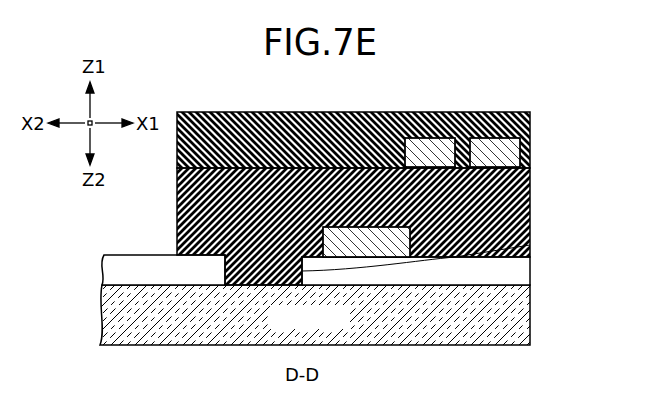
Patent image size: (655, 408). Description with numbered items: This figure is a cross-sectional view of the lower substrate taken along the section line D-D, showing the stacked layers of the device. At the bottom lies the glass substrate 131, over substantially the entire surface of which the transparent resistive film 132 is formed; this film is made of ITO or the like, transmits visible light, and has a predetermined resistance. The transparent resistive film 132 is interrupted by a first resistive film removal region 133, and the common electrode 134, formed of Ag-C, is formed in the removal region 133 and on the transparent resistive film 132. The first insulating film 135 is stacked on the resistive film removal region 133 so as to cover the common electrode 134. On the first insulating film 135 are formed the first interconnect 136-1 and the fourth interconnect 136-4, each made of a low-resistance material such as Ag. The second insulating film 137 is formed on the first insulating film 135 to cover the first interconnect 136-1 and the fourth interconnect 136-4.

The glass substrate 131 is at (530, 307).
The transparent resistive film 132 is at (530, 267).
The first resistive film removal regions 133 is at (530, 245).
The common electrode 134 is at (412, 236).
The first insulating film 135 is at (530, 178).
The first interconnect 136-1 is at (510, 112).
The fourth interconnect 136-4 is at (415, 112).
The second insulating film 137 is at (530, 118).